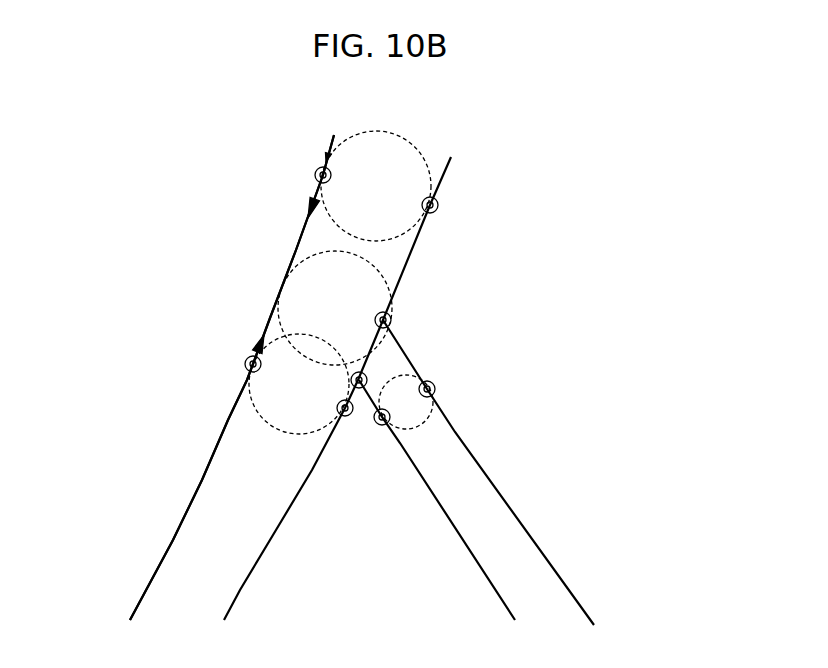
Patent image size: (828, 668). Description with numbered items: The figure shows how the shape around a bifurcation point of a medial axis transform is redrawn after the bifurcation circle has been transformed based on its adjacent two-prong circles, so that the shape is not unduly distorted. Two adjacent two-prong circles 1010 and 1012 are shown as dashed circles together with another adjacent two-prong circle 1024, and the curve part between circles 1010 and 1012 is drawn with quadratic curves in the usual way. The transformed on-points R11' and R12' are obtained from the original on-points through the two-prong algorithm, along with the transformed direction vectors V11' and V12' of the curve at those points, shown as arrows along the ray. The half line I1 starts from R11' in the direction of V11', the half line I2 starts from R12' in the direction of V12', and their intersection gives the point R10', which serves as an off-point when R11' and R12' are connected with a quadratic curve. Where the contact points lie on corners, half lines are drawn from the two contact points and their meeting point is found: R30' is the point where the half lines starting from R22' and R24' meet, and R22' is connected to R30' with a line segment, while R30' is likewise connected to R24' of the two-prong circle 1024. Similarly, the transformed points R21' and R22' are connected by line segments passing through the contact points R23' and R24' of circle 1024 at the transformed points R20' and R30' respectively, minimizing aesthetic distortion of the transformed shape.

The 2-prong circle 1010 is at (423, 153).
The 2-prong circle 1012 is at (270, 427).
The 2-prong circle 1024 is at (456, 432).
The intersection point R10' is at (321, 308).
The transformed on-point R11' is at (235, 182).
The transformed on-point R12' is at (195, 388).
The transformed contact point R20' is at (448, 279).
The transformed point R21' is at (518, 196).
The transformed point R22' is at (349, 468).
The contact point R23' is at (492, 377).
The contact point R24' is at (398, 507).
The intersection point R30' is at (440, 335).
The transformed direction vector V11' is at (303, 186).
The transformed direction vector V12' is at (240, 338).
The half line I1 is at (297, 248).
The half line I2 is at (270, 318).